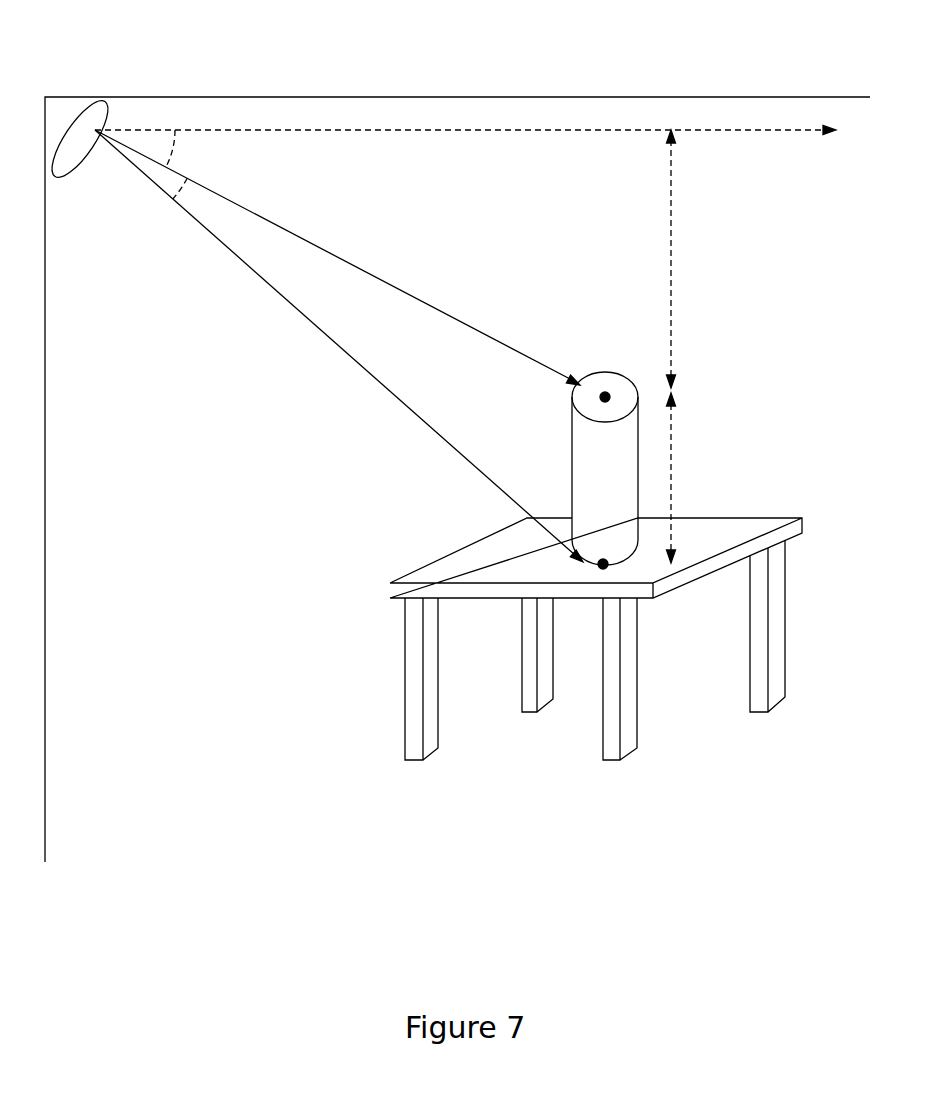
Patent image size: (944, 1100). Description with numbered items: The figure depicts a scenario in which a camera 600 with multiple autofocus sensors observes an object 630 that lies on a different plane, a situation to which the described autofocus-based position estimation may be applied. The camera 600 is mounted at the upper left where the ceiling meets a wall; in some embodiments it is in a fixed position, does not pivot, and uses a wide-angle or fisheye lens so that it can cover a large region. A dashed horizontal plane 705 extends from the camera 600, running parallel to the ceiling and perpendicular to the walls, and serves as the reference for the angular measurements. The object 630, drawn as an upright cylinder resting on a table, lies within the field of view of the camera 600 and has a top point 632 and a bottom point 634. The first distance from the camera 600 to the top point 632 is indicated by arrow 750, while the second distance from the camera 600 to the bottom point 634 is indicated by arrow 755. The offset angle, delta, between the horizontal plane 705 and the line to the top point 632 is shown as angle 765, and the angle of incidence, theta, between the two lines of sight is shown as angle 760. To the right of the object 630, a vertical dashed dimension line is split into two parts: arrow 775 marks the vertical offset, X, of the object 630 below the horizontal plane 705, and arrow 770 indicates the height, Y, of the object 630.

The camera 600 is at (95, 108).
The horizontal plane 705 is at (440, 118).
The arrow indicating distance D1 750 is at (405, 270).
The arrow indicating distance D2 755 is at (326, 375).
The offset angle 765 is at (200, 157).
The angle of incidence 760 is at (198, 210).
The object 630 is at (548, 475).
The top point 632 is at (600, 372).
The bottom point 634 is at (622, 580).
The arrow indicating vertical offset X 775 is at (688, 256).
The arrow indicating height Y 770 is at (693, 459).